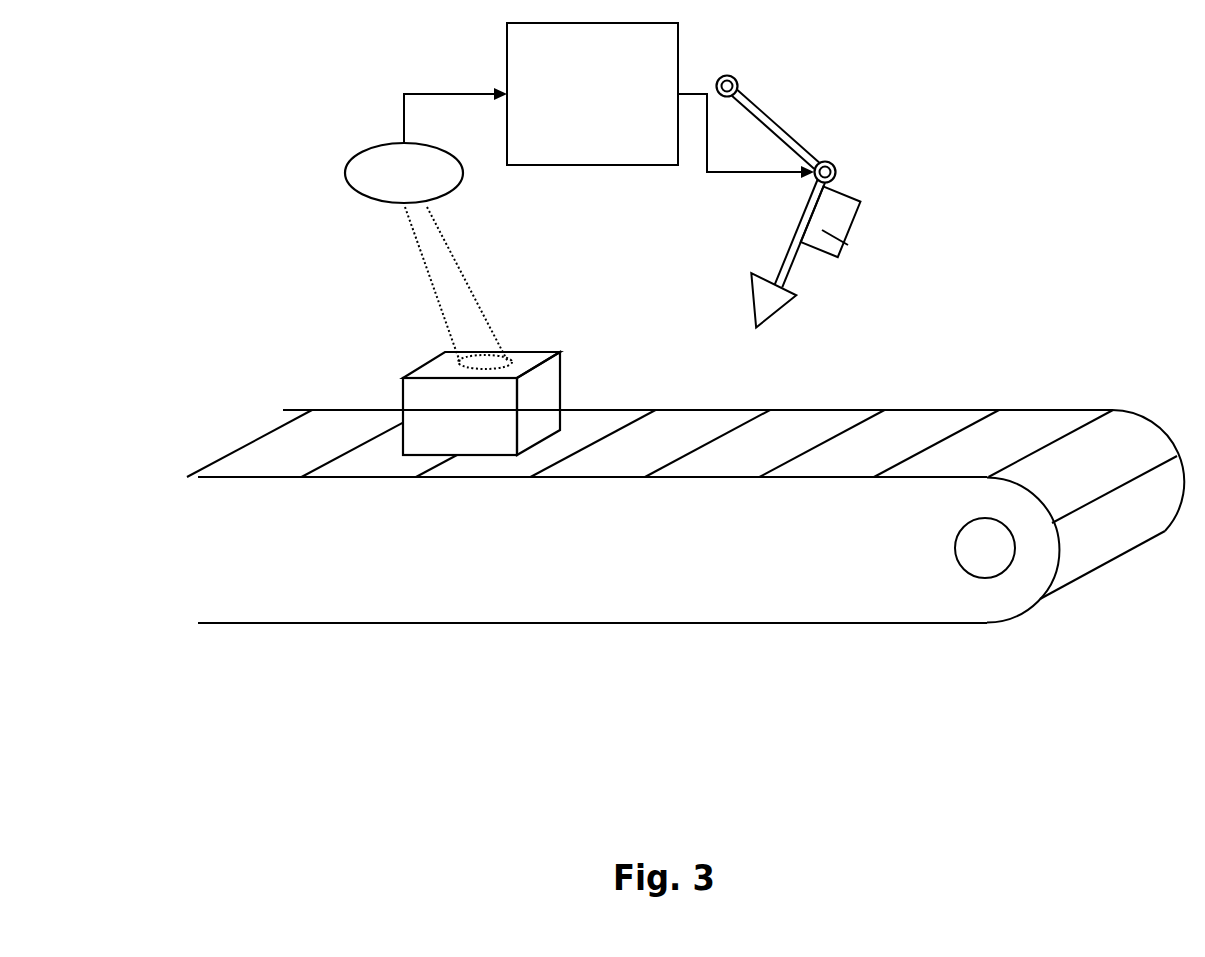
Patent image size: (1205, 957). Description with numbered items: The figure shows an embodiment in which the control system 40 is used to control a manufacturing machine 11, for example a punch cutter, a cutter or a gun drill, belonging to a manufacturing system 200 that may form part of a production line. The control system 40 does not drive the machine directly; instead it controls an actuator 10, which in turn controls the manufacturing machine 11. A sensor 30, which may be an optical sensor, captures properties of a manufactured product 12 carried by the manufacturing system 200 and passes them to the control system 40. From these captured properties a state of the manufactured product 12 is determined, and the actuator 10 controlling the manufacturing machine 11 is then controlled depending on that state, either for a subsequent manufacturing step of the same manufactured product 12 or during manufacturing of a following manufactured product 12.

The control system 40 is at (492, 32).
The sensor 30 is at (343, 178).
The manufacturing machine 11 is at (792, 138).
The actuator 10 is at (852, 215).
The manufactured product 12 is at (567, 382).
The manufacturing system 200 is at (580, 625).